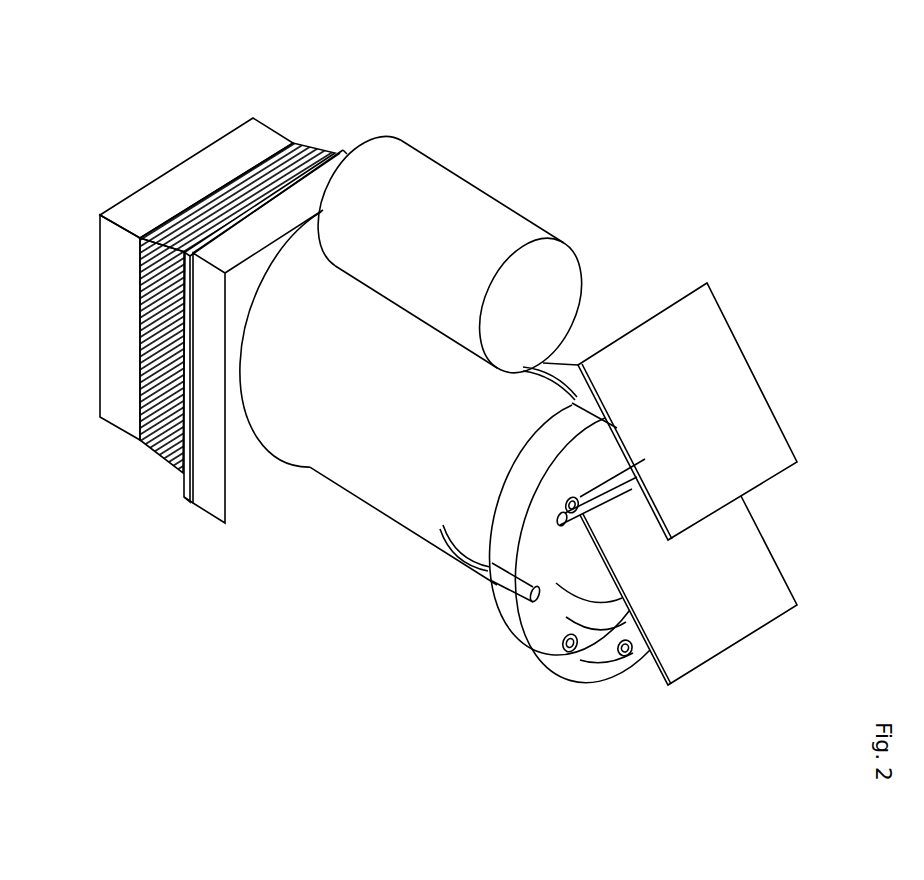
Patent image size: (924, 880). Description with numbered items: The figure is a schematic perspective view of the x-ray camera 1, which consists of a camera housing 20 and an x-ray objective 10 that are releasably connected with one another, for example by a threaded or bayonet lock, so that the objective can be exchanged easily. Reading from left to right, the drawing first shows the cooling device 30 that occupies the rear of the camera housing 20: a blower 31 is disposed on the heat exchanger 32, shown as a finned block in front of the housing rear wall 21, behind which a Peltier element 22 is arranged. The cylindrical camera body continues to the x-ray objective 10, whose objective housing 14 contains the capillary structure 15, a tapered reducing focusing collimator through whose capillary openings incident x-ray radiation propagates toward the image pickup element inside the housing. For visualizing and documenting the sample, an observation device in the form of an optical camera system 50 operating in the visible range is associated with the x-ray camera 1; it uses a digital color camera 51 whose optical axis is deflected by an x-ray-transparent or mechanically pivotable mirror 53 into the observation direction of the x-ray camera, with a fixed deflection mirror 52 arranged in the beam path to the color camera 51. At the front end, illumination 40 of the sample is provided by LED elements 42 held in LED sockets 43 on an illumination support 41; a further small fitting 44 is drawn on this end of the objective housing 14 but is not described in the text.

The x-ray camera 1 is at (652, 124).
The x-ray objective 10 is at (399, 568).
The objective housing 14 is at (412, 428).
The capillary structure 15 is at (577, 567).
The camera housing 20 is at (176, 525).
The housing rear wall 21 is at (187, 483).
The Peltier element 22 is at (215, 480).
The cooling device 30 is at (128, 134).
The blower 31 is at (162, 200).
The heat exchanger 32 is at (115, 280).
The illumination 40 is at (621, 714).
The illumination support 41 is at (524, 545).
The LED elements 42 is at (571, 660).
The LED sockets 43 is at (576, 652).
The cable connector 44 is at (512, 592).
The optical camera system 50 is at (752, 265).
The digital color camera 51 is at (485, 245).
The fixed deflection mirror 52 is at (727, 413).
The mirror 53 is at (730, 557).